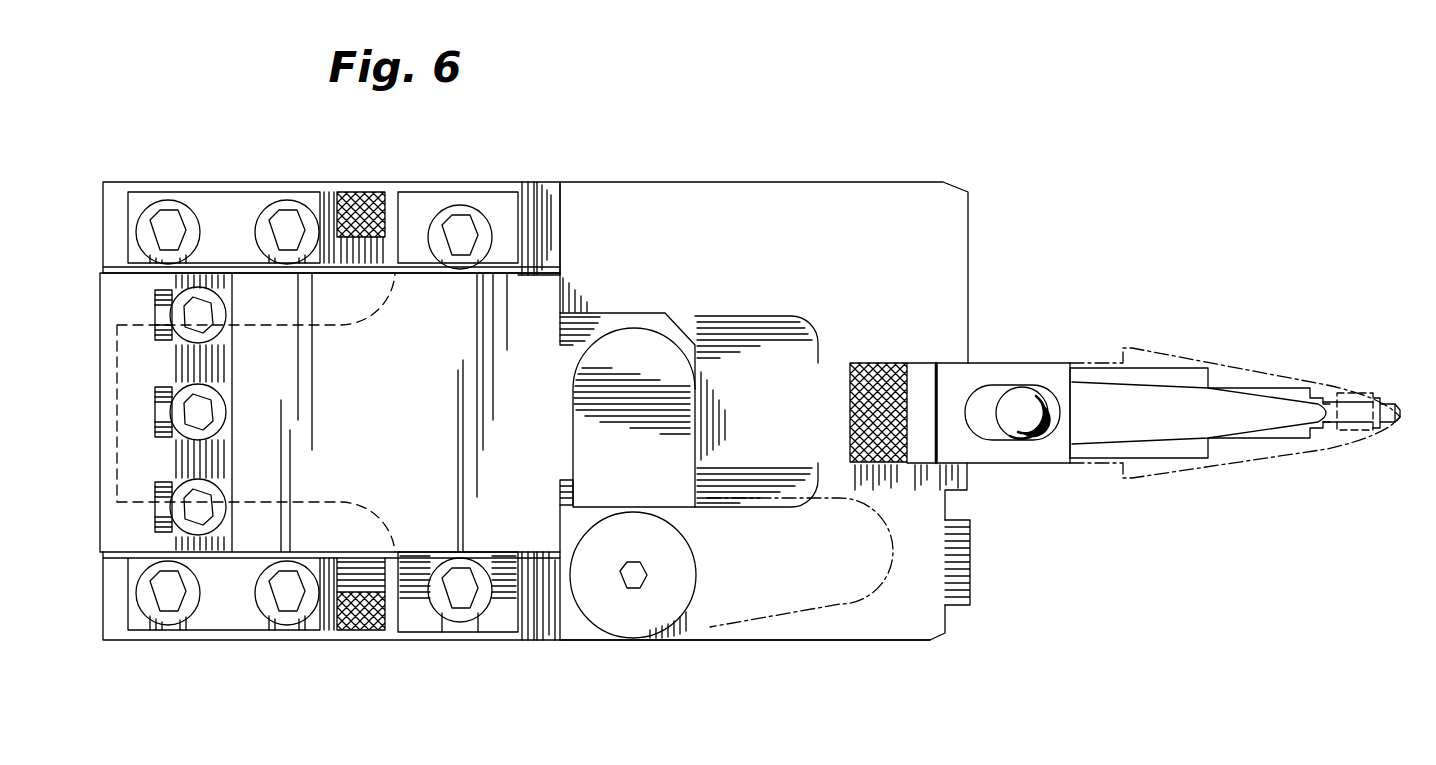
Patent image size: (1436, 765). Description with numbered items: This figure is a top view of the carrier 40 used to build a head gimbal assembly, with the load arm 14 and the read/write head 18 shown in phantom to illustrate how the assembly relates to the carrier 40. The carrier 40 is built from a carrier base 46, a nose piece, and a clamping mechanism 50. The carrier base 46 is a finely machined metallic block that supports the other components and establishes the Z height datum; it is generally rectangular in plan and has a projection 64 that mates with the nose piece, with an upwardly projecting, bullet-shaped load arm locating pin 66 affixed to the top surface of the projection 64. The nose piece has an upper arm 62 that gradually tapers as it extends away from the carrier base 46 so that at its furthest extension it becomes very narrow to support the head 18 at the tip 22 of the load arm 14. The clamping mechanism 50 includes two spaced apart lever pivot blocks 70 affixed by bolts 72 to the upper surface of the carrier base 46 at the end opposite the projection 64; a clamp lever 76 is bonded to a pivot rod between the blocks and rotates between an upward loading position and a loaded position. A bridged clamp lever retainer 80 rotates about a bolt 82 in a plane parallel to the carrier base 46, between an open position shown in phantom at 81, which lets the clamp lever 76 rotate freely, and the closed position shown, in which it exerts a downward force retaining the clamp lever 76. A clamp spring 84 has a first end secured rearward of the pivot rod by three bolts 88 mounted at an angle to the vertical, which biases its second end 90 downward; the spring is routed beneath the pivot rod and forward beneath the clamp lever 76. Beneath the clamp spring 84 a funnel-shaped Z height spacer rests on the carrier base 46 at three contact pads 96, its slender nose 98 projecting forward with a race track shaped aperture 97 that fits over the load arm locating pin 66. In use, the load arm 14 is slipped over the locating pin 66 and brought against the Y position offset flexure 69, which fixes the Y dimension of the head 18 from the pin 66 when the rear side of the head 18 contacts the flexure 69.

The load arm 14 is at (1208, 468).
The head 18 is at (1348, 432).
The tip 22 is at (1393, 397).
The carrier 40 is at (752, 180).
The carrier base 46 is at (868, 640).
The clamping mechanism 50 is at (250, 293).
The upper arm 62 is at (1388, 430).
The projection 64 is at (1163, 448).
The load arm locating pin 66 is at (1025, 400).
The Y position offset flexure 69 is at (1277, 418).
The lever pivot blocks 70 is at (247, 215).
The bolts 72 is at (168, 212).
The clamp lever 76 is at (540, 287).
The clamp lever retainer 80 is at (637, 347).
The open position of clamp lever retainer 81 is at (778, 618).
The bolt 82 is at (640, 622).
The clamp spring 84 is at (392, 447).
The bolts 88 is at (157, 505).
The second end 90 is at (955, 385).
The contact pads 96 is at (388, 277).
The aperture 97 is at (990, 430).
The nose 98 is at (1068, 388).